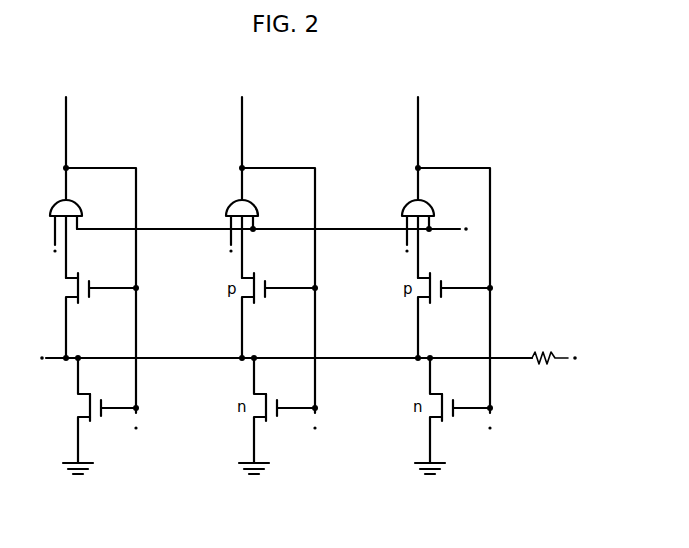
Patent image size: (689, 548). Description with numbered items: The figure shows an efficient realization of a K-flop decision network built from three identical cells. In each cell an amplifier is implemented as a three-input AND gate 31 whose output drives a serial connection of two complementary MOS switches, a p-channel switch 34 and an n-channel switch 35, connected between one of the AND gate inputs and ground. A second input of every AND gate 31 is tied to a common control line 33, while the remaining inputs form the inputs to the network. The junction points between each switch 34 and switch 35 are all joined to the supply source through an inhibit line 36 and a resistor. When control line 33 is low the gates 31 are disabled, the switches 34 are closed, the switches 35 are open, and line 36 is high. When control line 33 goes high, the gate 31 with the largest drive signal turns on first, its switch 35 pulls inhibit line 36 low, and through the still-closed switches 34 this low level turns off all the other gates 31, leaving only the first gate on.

The AND gate 31 is at (55, 239).
The control line 33 is at (357, 228).
The p-channel switch 34 is at (95, 315).
The n-channel switch 35 is at (100, 414).
The inhibit line 36 is at (375, 362).